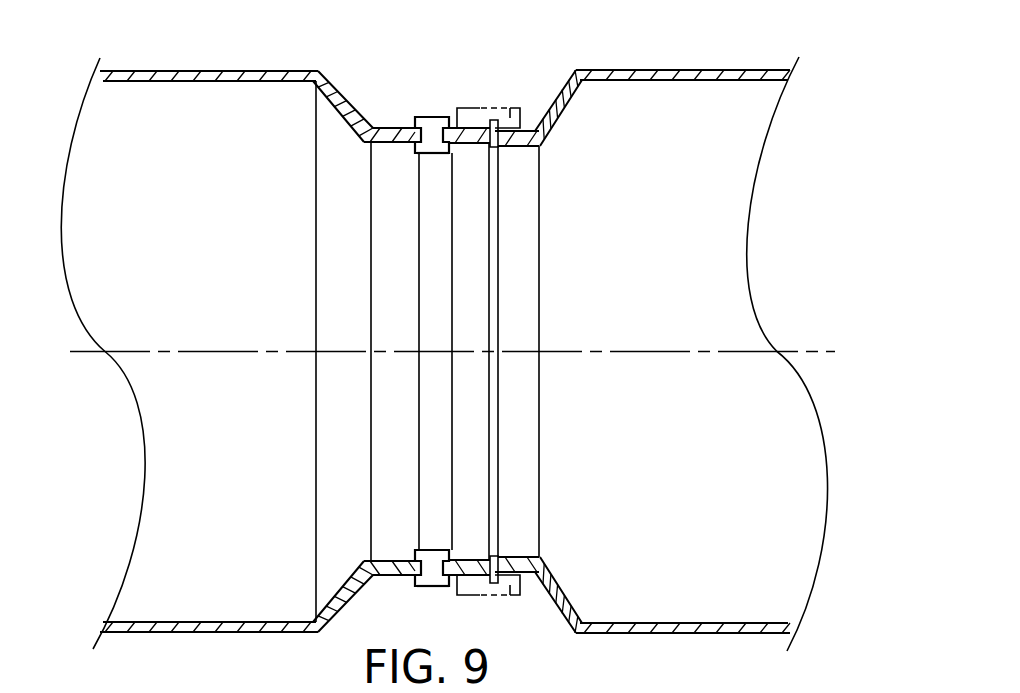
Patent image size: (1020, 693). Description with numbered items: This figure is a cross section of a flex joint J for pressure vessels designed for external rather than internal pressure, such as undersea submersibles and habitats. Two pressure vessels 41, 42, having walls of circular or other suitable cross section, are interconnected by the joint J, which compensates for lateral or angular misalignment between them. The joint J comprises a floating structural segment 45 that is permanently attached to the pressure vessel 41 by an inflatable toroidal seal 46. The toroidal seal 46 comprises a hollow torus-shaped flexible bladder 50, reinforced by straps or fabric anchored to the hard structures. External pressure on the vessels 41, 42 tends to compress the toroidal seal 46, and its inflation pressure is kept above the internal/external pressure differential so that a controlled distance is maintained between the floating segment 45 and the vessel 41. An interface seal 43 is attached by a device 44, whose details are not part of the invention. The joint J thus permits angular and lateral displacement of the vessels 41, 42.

The pressure vessel 41 is at (210, 70).
The pressure vessel 42 is at (686, 70).
The interface seal 43 is at (510, 112).
The device 44 is at (477, 108).
The floating structural segment 45 is at (473, 135).
The inflatable toroidal seal 46 is at (414, 108).
The hollow torus-shaped flexible bladder 50 is at (435, 153).
The joint J is at (442, 592).